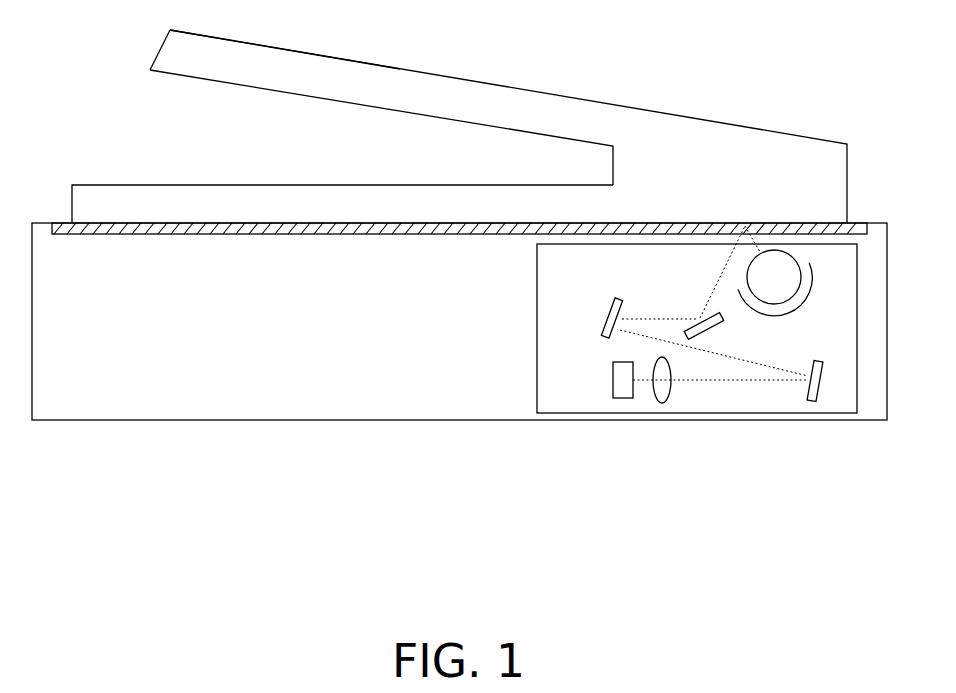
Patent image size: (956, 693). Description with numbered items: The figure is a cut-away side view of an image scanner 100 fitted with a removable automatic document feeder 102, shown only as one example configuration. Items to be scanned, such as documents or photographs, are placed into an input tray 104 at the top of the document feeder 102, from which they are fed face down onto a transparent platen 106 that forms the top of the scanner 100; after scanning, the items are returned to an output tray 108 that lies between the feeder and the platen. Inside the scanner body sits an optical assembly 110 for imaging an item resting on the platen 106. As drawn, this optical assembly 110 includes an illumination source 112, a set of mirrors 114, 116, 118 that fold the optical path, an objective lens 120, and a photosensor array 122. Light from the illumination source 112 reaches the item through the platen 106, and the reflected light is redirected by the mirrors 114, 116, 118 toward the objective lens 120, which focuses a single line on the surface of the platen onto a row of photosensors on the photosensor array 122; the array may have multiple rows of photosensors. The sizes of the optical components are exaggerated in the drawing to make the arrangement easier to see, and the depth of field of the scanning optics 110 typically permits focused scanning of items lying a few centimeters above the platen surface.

The image scanner 100 is at (172, 379).
The automatic document feeder 102 is at (712, 179).
The input tray 104 is at (305, 52).
The transparent platen 106 is at (310, 236).
The output tray 108 is at (150, 185).
The optical assembly 110 is at (536, 330).
The illumination source 112 is at (789, 313).
The first mirror 114 is at (616, 298).
The second mirror 116 is at (721, 328).
The third mirror 118 is at (810, 386).
The objective lens 120 is at (670, 390).
The photosensor array 122 is at (612, 376).